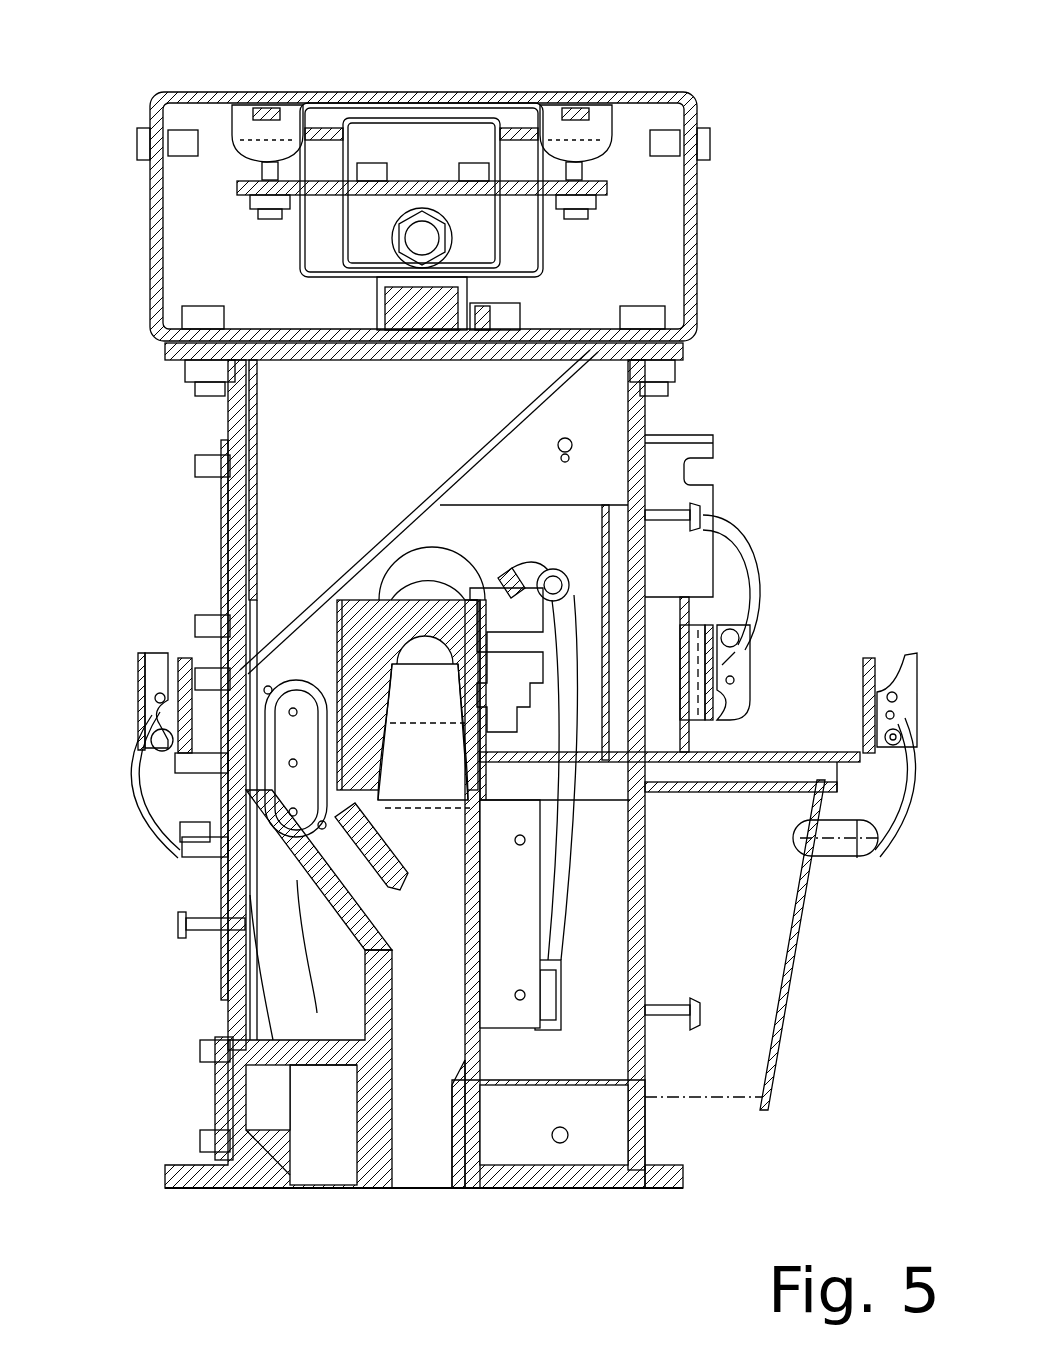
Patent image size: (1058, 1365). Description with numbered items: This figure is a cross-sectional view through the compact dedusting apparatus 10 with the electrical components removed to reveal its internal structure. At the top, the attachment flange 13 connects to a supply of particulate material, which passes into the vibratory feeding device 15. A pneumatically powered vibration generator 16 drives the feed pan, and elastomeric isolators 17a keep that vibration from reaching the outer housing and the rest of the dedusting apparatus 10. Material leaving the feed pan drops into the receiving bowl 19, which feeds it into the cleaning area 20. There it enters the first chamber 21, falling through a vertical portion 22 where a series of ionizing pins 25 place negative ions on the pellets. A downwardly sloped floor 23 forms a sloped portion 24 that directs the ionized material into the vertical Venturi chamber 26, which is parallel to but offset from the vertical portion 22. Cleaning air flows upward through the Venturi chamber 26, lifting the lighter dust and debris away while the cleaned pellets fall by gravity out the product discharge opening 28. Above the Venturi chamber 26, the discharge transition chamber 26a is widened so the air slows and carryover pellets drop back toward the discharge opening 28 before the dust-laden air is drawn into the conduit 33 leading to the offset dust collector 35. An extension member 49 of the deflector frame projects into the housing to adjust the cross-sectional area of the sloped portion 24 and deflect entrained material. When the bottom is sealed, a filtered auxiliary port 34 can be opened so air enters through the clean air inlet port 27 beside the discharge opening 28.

The dedusting apparatus 10 is at (789, 131).
The attachment flange 13 is at (592, 96).
The vibratory feeding device 15 is at (565, 243).
The vibration generator 16 is at (393, 300).
The elastomeric isolators 17a is at (243, 122).
The receiving bowl 19 is at (455, 478).
The cleaning area 20 is at (175, 648).
The first chamber 21 is at (305, 655).
The vertical portion 22 is at (250, 690).
The downwardly sloped floor 23 is at (340, 890).
The sloped portion 24 is at (366, 893).
The ionizing pins 25 is at (290, 770).
The Venturi chamber 26 is at (410, 1003).
The discharge transition chamber 26a is at (440, 783).
The clean air inlet port 27 is at (322, 1208).
The product discharge opening 28 is at (423, 1208).
The conduit 33 is at (425, 664).
The filtered auxiliary port 34 is at (185, 1108).
The dust collector 35 is at (762, 1045).
The extension member 49 is at (470, 842).